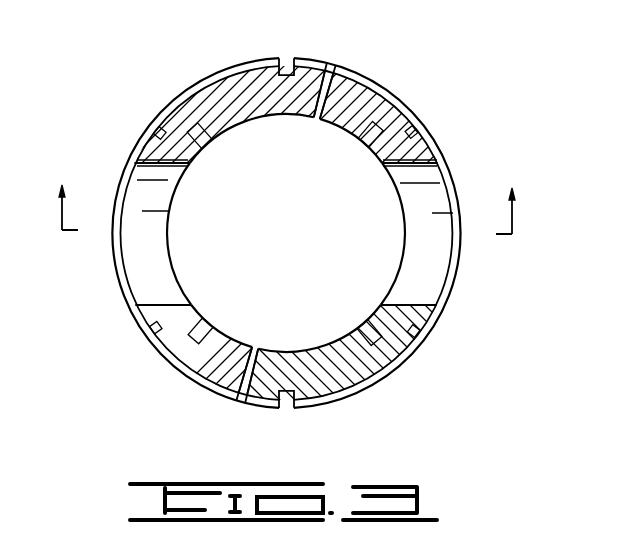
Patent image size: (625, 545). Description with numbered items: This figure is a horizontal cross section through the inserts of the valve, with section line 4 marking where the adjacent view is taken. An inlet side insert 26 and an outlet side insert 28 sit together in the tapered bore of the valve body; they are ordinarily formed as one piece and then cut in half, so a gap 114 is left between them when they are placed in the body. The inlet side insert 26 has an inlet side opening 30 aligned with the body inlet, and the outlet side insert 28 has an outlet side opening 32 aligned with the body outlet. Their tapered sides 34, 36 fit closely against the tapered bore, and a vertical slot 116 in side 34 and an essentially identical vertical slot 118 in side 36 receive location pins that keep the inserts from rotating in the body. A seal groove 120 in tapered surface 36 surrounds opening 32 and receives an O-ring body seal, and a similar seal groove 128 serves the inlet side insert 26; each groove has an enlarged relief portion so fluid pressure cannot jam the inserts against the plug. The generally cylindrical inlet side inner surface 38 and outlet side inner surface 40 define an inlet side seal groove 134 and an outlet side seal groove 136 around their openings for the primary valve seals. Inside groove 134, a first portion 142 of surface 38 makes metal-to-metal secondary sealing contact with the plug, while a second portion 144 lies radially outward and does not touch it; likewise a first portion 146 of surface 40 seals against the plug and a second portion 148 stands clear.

The inlet side insert 26 is at (218, 52).
The outlet side insert 28 is at (456, 94).
The inlet side opening 30 is at (148, 305).
The outlet side opening 32 is at (414, 305).
The tapered side 34 is at (190, 98).
The tapered side 36 is at (380, 97).
The inlet side inner surface 38 is at (251, 134).
The outlet side inner surface 40 is at (285, 343).
The gap 114 is at (330, 64).
The vertical slot 116 is at (284, 62).
The vertical slot 118 is at (283, 408).
The seal groove 120 is at (412, 136).
The seal groove 128 is at (156, 131).
The inlet side seal groove 134 is at (204, 145).
The outlet side seal groove 136 is at (368, 144).
The first portion 142 is at (198, 310).
The second portion 144 is at (293, 116).
The first portion 146 is at (377, 306).
The second portion 148 is at (343, 125).
The section line 4- 4 is at (288, 209).